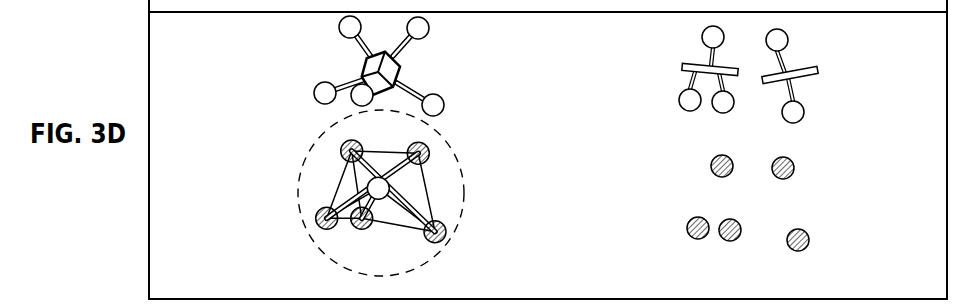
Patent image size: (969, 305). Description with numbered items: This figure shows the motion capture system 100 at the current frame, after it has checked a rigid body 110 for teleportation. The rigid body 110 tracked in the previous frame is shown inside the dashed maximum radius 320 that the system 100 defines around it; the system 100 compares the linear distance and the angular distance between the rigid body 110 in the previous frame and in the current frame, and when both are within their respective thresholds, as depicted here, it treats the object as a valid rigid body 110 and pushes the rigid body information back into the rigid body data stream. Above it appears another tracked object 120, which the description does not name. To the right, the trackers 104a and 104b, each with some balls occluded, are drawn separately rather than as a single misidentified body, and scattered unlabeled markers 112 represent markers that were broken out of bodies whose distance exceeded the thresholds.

The motion capture system 100 is at (565, 44).
The rigid body 110 is at (461, 170).
The tetrahedral molecule 120 is at (379, 58).
The maximum radius 320 is at (462, 208).
The tracker 104a is at (668, 52).
The tracker 104b is at (826, 58).
The unlabeled markers 112 is at (711, 170).